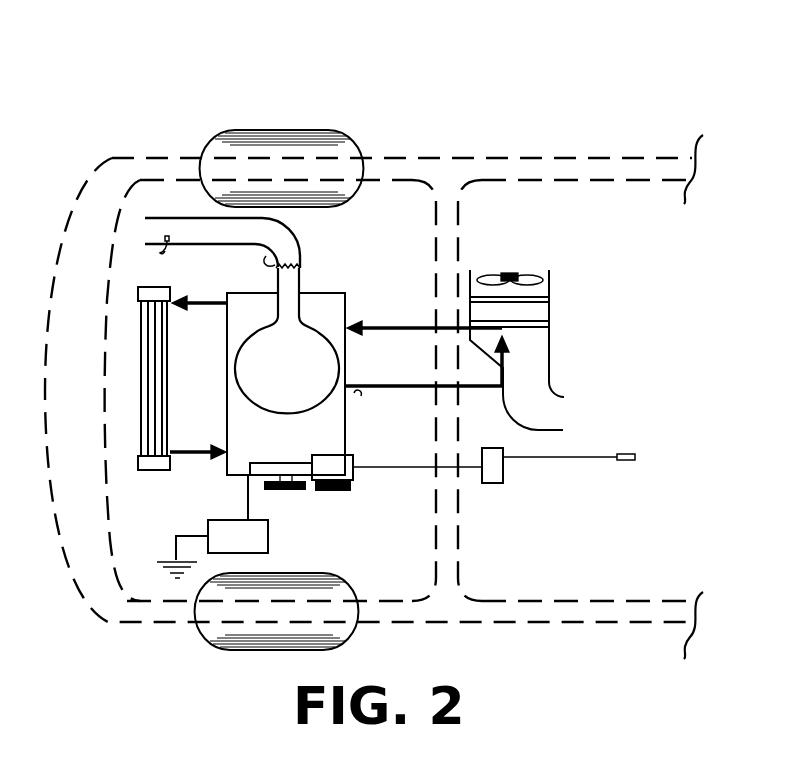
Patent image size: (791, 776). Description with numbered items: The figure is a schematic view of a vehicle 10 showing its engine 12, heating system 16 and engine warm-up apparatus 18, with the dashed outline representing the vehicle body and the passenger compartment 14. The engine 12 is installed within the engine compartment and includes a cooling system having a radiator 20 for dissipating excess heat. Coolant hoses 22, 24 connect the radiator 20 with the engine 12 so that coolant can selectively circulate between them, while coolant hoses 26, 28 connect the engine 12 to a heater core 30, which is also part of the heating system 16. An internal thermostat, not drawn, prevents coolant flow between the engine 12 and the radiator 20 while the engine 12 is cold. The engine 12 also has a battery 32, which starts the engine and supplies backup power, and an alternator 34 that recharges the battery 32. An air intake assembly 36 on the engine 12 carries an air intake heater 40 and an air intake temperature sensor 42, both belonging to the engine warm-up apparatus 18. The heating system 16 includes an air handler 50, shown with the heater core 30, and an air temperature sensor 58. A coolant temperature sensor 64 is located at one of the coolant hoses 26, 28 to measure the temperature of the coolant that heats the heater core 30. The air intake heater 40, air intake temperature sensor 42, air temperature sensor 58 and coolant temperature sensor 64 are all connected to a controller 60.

The vehicle 10 is at (312, 88).
The engine 12 is at (208, 258).
The passenger compartment 14 is at (628, 165).
The heating system 16 is at (566, 348).
The engine warm-up apparatus 18 is at (501, 496).
The radiator 20 is at (170, 476).
The coolant hose 22 is at (198, 306).
The coolant hose 24 is at (190, 450).
The coolant hose 26 is at (400, 384).
The coolant hose 28 is at (400, 324).
The heater core 30 is at (494, 325).
The battery 32 is at (258, 537).
The alternator 34 is at (356, 477).
The air intake assembly 36 is at (317, 328).
The air intake heater 40 is at (292, 262).
The air intake temperature sensor 42 is at (165, 238).
The air handler 50 is at (520, 255).
The air temperature sensor 58 is at (626, 452).
The controller 60 is at (504, 470).
The coolant temperature sensor 64 is at (349, 389).